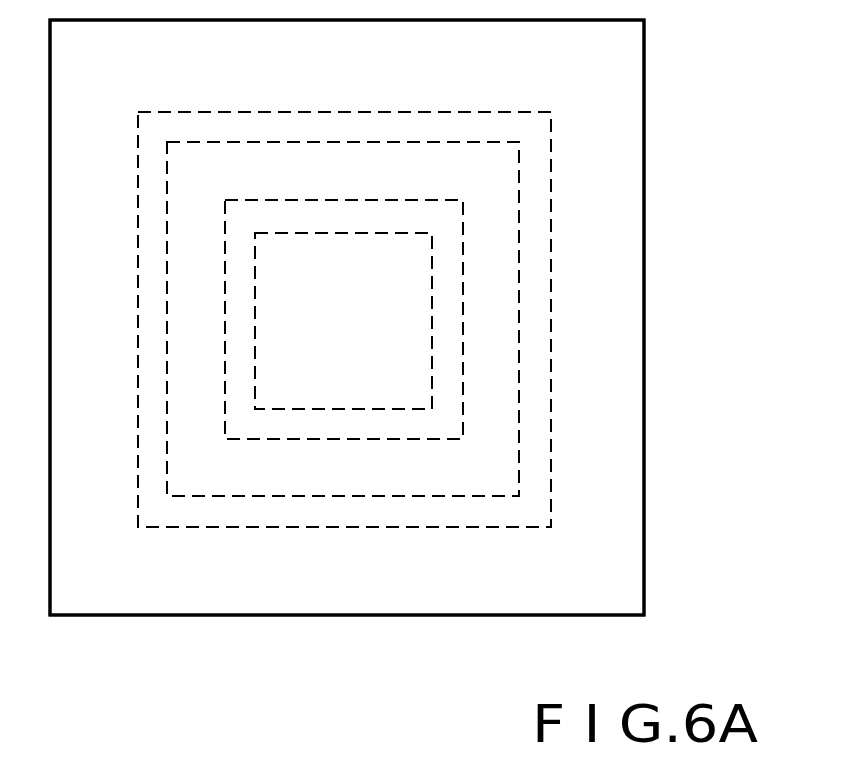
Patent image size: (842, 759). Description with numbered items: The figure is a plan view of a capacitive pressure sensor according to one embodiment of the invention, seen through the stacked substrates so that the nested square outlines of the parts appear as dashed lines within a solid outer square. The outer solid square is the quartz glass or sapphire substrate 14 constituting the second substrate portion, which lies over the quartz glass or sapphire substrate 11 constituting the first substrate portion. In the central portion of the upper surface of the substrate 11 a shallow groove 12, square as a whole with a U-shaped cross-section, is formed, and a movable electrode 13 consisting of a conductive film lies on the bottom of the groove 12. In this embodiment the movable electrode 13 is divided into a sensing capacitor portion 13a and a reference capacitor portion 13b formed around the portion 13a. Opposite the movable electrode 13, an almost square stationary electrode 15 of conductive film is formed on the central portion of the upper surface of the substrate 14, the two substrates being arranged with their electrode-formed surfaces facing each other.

The quartz glass or sapphire substrate 11 is at (347, 317).
The groove 12 is at (532, 389).
The movable electrode 13 is at (501, 319).
The sensing capacitor portion 13a is at (408, 316).
The reference capacitor portion 13b is at (498, 258).
The quartz glass or sapphire substrate 14 is at (588, 447).
The stationary electrode 15 is at (537, 199).